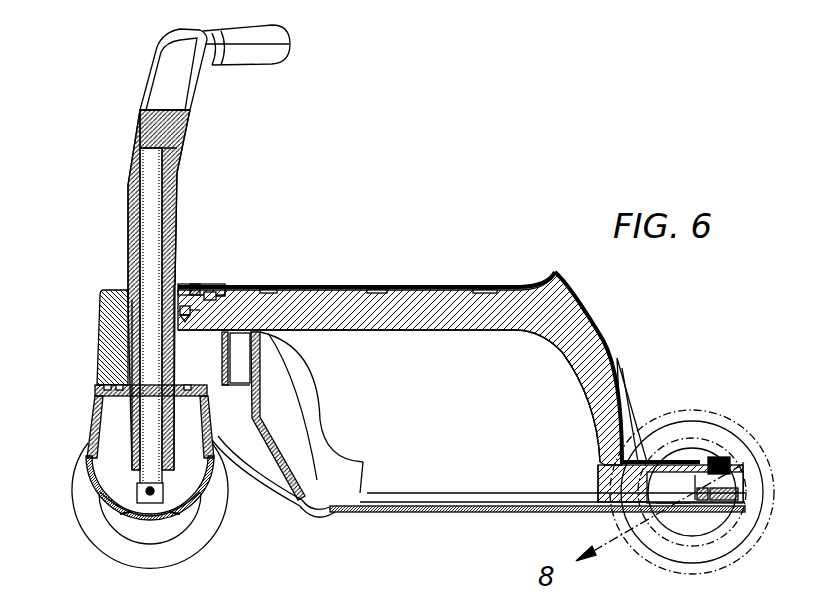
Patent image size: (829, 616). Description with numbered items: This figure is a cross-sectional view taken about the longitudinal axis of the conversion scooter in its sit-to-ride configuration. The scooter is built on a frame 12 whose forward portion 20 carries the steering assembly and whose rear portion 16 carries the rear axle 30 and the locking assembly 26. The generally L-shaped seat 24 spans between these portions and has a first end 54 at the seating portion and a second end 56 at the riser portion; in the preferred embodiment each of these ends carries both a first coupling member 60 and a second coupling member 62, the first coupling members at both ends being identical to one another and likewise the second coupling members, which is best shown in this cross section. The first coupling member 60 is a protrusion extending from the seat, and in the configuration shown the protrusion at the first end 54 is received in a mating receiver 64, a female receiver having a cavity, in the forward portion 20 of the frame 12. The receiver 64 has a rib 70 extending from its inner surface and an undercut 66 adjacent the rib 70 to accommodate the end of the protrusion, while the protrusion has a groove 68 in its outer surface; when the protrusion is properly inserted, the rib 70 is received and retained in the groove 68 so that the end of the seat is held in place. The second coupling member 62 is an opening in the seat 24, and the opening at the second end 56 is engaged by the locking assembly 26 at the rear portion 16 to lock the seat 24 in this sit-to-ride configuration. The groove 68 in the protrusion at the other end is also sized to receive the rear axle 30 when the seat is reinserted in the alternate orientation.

The frame 12 is at (455, 498).
The rear portion 16 is at (748, 504).
The forward portion 20 is at (110, 365).
The seat 24 is at (434, 306).
The locking assembly 26 is at (728, 470).
The rear axle 30 is at (712, 497).
The first end 54 is at (306, 288).
The second end 56 is at (680, 466).
The first coupling member 60 is at (180, 308).
The second coupling member 62 is at (178, 312).
The receiver 64 is at (212, 292).
The undercut 66 is at (190, 292).
The groove 68 is at (194, 308).
The rib 70 is at (200, 292).